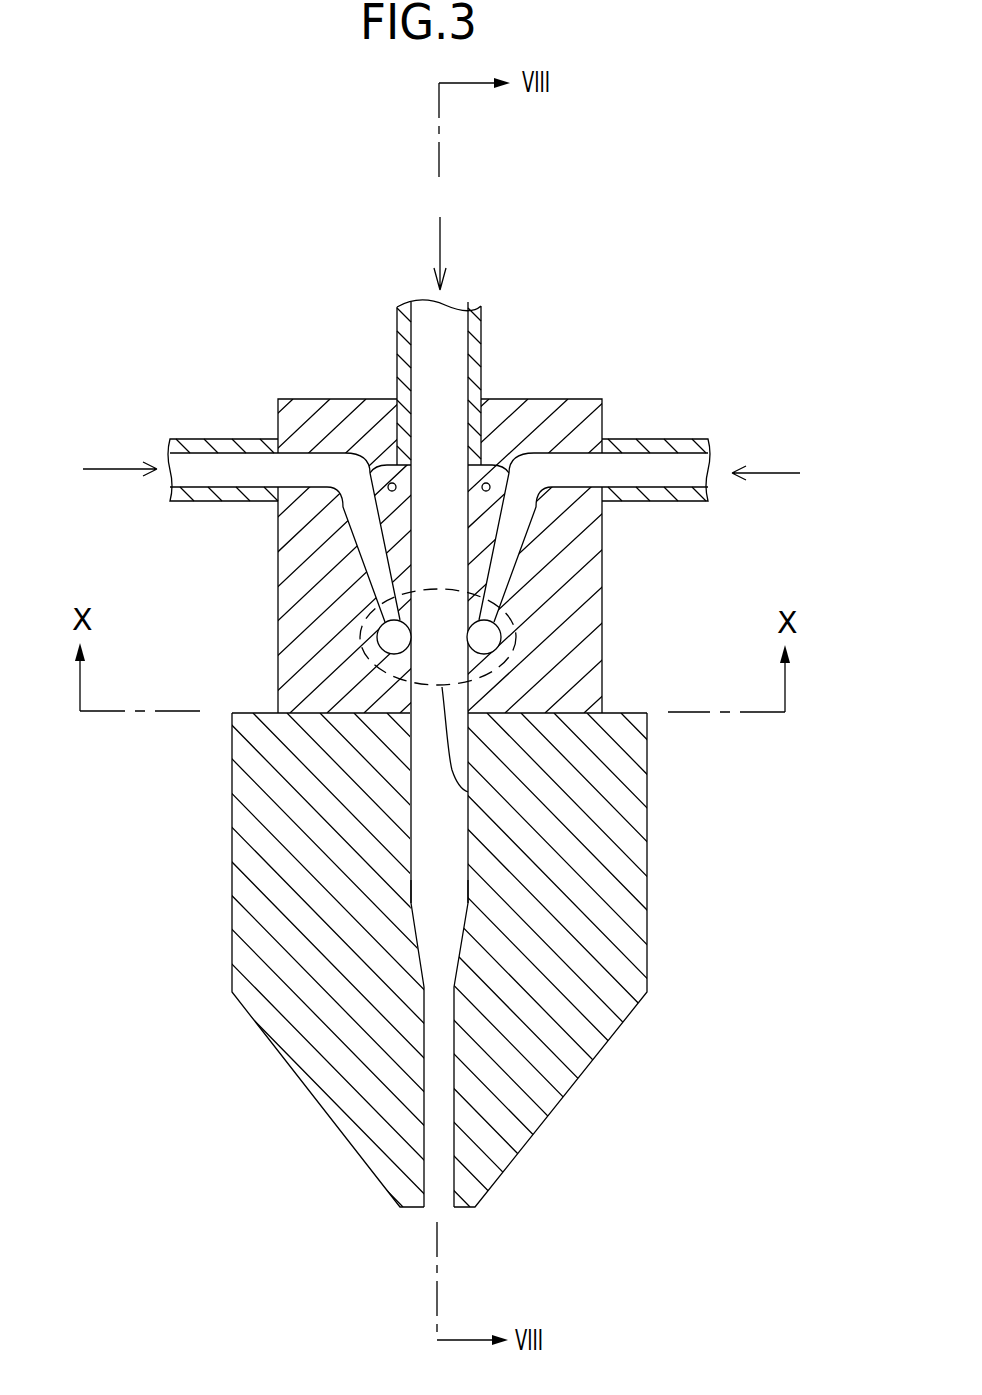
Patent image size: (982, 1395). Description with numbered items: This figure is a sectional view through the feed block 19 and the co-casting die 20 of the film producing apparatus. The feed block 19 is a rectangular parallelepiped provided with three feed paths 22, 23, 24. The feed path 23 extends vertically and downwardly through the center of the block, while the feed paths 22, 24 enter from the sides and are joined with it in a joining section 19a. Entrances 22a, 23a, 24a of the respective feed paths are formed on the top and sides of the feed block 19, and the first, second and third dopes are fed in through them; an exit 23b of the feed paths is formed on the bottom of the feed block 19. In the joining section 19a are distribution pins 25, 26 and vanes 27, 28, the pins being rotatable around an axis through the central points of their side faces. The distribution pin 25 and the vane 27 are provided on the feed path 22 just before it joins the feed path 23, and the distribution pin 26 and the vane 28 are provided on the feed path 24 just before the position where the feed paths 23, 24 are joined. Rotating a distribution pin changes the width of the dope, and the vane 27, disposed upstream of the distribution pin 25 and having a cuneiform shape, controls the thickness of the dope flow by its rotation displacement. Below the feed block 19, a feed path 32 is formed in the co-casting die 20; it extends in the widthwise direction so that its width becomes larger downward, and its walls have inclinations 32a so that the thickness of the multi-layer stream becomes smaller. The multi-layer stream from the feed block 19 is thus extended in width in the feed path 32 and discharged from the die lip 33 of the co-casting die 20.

The feed block 19 is at (564, 378).
The joining section 19a is at (468, 792).
The co-casting die 20 is at (243, 1034).
The feed path 22 is at (520, 520).
The entrance 22a is at (603, 467).
The feed path 23 is at (427, 453).
The entrance 23a is at (442, 397).
The exit 23b is at (423, 705).
The feed path 24 is at (368, 543).
The entrance 24a is at (280, 470).
The distribution pin 25 is at (498, 655).
The distribution pin 26 is at (377, 641).
The vane 27 is at (468, 482).
The vane 28 is at (411, 527).
The feed path 32 is at (433, 787).
The inclinations 32a is at (453, 925).
The die lip 33 is at (432, 1207).